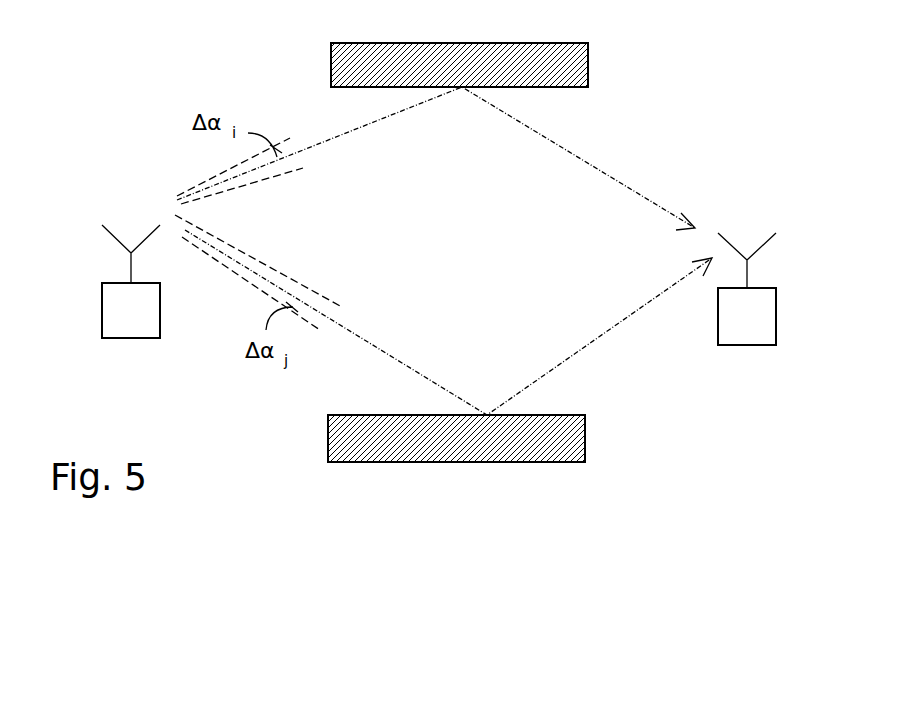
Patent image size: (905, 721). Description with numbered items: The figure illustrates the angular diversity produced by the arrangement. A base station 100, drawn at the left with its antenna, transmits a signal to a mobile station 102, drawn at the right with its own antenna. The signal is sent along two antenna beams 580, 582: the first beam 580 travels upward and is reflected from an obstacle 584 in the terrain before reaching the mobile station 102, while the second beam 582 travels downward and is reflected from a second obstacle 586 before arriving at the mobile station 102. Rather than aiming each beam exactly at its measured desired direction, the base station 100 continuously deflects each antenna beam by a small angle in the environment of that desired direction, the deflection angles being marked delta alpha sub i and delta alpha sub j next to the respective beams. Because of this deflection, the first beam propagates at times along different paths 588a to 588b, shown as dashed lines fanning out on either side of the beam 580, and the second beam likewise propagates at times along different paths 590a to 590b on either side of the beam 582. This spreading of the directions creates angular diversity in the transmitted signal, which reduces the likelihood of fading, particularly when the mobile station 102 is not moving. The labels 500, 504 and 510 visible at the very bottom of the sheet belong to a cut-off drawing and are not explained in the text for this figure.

The base station 100 is at (123, 339).
The mobile station 102 is at (745, 346).
The beam 580 is at (370, 125).
The beam 582 is at (388, 353).
The obstacle 584 is at (418, 43).
The obstacle 586 is at (413, 462).
The path 588a is at (260, 180).
The path 588b is at (220, 172).
The path 590a is at (290, 278).
The path 590b is at (233, 267).
The partial label (cut-off figure) 500 is at (62, 720).
The partial label (cut-off figure) 504 is at (348, 720).
The partial label (cut-off figure) 510 is at (680, 720).